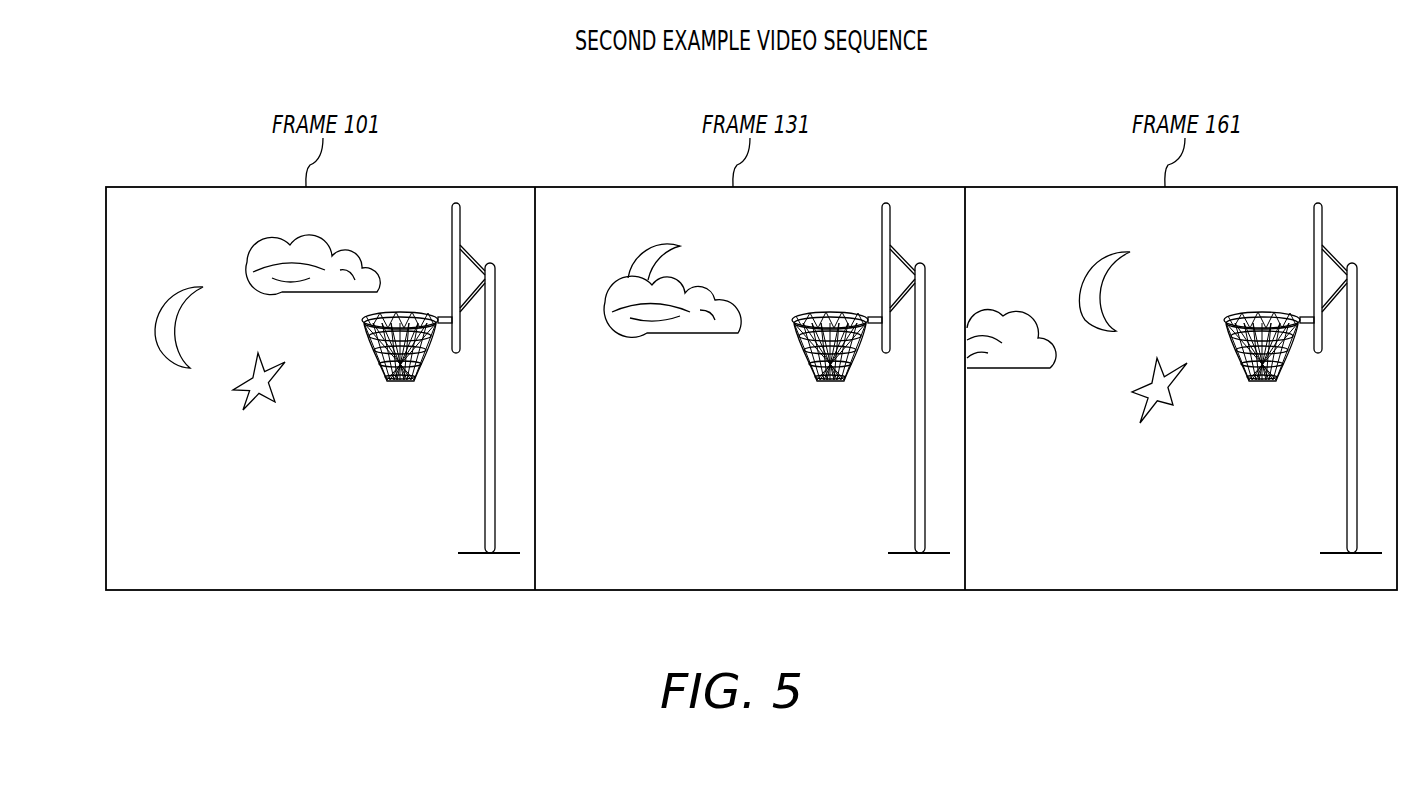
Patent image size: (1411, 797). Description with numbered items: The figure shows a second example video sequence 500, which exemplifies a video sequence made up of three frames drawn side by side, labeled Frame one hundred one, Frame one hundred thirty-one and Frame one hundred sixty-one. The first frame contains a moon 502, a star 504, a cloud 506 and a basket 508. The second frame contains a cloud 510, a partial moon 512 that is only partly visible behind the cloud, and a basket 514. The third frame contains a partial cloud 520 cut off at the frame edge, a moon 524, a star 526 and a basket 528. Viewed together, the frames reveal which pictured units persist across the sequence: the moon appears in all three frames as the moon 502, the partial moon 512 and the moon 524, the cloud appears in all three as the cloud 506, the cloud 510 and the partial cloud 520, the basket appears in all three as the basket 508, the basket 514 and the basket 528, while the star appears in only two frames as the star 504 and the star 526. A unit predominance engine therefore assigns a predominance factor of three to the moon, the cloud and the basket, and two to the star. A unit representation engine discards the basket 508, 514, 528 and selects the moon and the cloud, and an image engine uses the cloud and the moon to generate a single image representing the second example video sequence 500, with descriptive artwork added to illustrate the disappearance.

The second example video sequence 500 is at (1321, 128).
The moon 502 is at (163, 360).
The star 504 is at (257, 405).
The cloud 506 is at (300, 293).
The basket 508 is at (392, 395).
The cloud 510 is at (668, 334).
The partial moon 512 is at (652, 248).
The basket 514 is at (812, 404).
The partial cloud 520 is at (995, 368).
The moon 524 is at (1103, 295).
The star 526 is at (1143, 405).
The basket 528 is at (1253, 418).